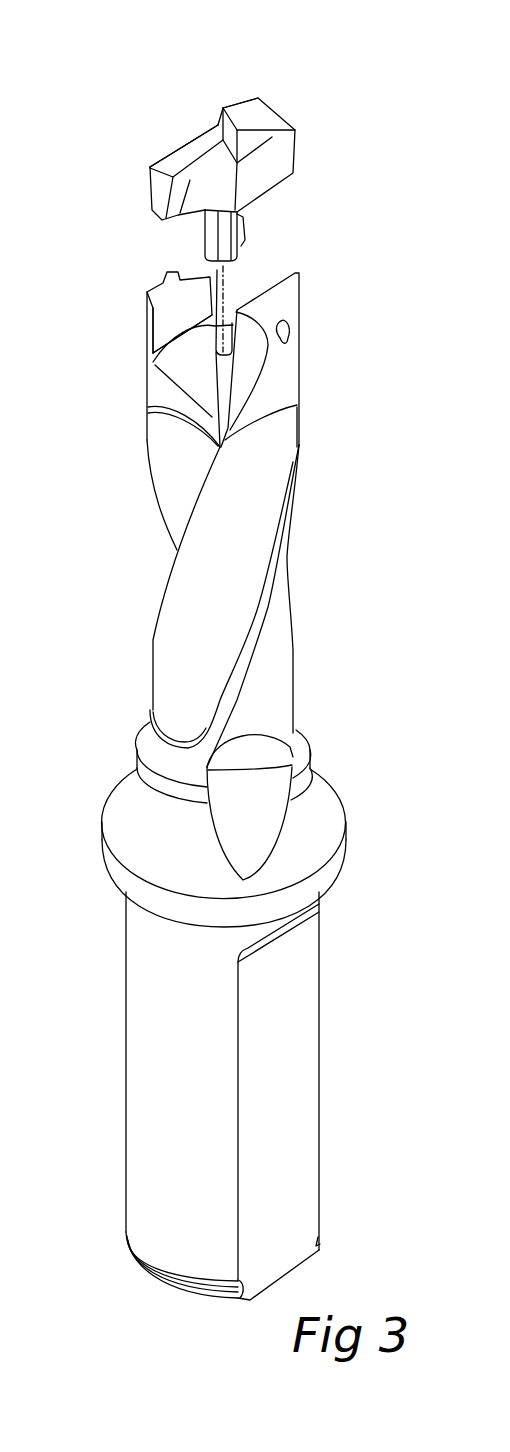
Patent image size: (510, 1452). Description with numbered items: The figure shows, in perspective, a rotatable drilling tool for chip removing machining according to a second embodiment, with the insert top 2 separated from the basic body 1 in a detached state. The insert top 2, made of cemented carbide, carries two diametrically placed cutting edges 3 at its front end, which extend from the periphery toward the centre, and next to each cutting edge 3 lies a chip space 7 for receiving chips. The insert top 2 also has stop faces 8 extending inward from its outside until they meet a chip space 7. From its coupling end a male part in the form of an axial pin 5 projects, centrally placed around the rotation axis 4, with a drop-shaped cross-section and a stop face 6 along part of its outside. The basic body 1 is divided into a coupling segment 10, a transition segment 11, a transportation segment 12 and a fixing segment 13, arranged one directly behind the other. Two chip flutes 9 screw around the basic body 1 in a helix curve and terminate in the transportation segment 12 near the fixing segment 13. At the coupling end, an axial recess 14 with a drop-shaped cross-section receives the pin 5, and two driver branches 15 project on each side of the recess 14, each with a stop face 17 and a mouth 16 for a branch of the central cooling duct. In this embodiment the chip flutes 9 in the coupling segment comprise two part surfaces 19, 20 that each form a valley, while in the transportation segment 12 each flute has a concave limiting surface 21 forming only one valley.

The basic body 1 is at (118, 671).
The insert top 2 is at (136, 114).
The cutting edges 3 is at (240, 101).
The rotation axis 4 is at (218, 279).
The axial pin 5 is at (212, 248).
The stop face 6 is at (241, 224).
The chip space 7 is at (201, 199).
The stop faces 8 is at (284, 171).
The chip flutes 9 is at (162, 522).
The coupling segment 10 is at (371, 337).
The transition segment 11 is at (371, 410).
The transportation segment 12 is at (371, 752).
The fixing segment 13 is at (371, 1257).
The axial recess 14 is at (210, 340).
The driver branches 15 is at (158, 294).
The mouth 16 is at (280, 326).
The stop face 17 is at (162, 315).
The part surface 19 is at (243, 364).
The part surface 20 is at (187, 395).
The concave limiting surface 21 is at (170, 466).